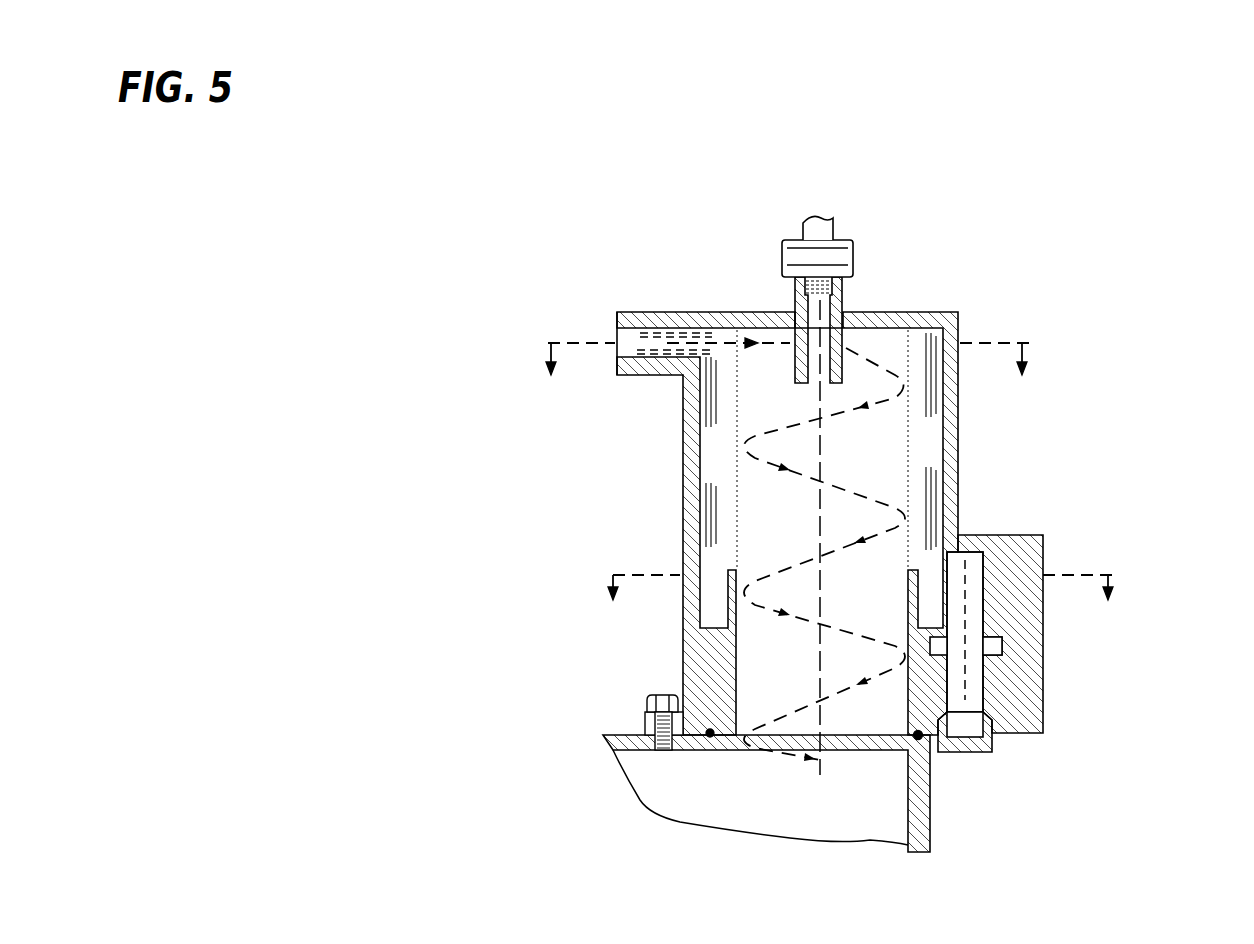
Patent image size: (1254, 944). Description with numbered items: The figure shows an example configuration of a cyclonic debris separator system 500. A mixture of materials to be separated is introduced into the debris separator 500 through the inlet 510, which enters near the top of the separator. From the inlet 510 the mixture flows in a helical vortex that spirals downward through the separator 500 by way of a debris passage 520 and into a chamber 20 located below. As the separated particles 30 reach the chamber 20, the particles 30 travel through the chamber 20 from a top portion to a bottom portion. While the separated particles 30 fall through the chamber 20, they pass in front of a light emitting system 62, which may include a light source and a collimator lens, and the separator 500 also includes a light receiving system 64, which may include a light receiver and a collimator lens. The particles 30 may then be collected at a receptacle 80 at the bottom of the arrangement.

The cyclonic debris separator system 500 is at (1040, 278).
The inlet 510 is at (637, 343).
The debris passage 520 is at (937, 570).
The separated particles 30 is at (805, 485).
The chamber 20 is at (997, 568).
The light emitting system 62 is at (992, 648).
The light receiving system 64 is at (938, 652).
The receptacle 80 is at (962, 728).